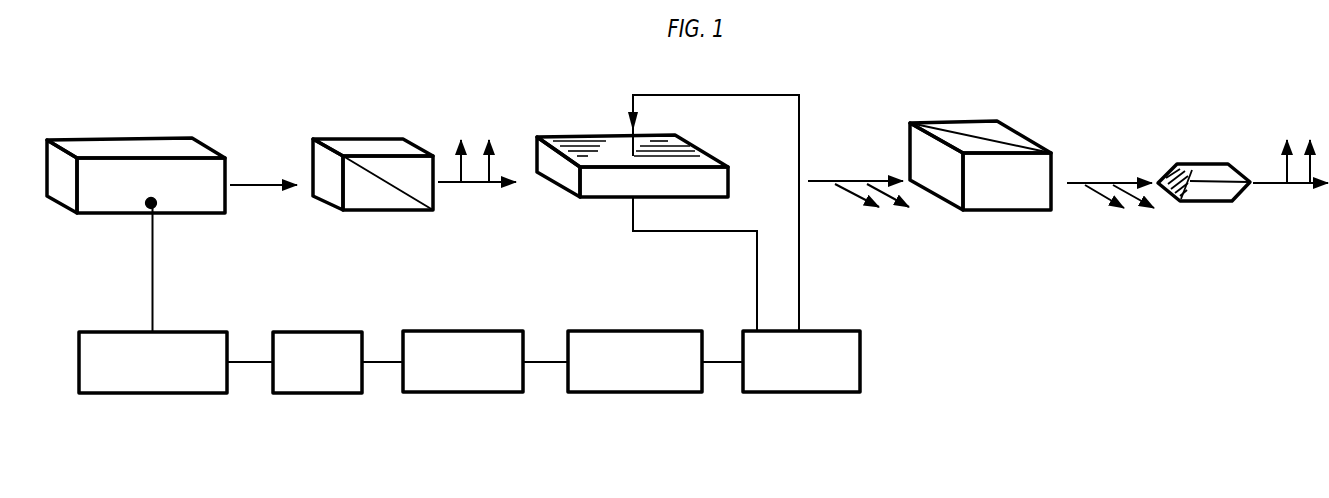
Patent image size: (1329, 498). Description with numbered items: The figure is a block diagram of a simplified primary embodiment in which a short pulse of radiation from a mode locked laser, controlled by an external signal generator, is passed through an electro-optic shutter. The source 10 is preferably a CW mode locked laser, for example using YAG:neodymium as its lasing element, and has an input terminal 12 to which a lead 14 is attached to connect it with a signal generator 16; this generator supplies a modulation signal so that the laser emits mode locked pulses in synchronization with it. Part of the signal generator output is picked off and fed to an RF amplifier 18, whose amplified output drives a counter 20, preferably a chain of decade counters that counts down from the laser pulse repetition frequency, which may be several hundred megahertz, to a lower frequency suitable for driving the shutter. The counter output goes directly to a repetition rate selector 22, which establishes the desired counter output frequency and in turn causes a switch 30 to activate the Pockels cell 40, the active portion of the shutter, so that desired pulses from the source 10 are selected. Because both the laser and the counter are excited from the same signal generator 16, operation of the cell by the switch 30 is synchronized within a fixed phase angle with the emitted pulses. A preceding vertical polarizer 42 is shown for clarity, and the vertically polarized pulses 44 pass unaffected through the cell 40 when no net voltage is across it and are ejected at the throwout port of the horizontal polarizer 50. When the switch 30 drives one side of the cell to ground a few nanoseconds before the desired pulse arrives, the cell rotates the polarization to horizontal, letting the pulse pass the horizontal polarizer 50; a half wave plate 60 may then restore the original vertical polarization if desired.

The source 10 is at (108, 139).
The input terminal 12 is at (156, 205).
The lead 14 is at (151, 271).
The signal generator 16 is at (140, 395).
The RF amplifier 18 is at (320, 395).
The counter 20 is at (465, 394).
The repetition rate selector 22 is at (652, 394).
The switch 30 is at (805, 394).
The Pockels cell 40 is at (700, 150).
The preceding polarizer 42 is at (411, 212).
The vertically polarized pulses 44 is at (487, 167).
The horizontal polarizer 50 is at (966, 120).
The half wave plate 60 is at (1240, 165).